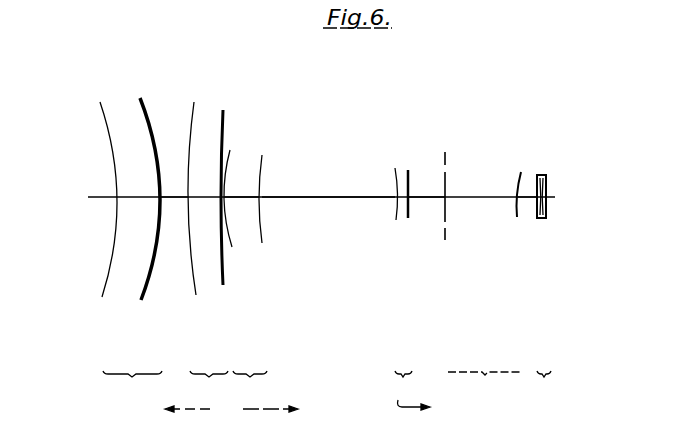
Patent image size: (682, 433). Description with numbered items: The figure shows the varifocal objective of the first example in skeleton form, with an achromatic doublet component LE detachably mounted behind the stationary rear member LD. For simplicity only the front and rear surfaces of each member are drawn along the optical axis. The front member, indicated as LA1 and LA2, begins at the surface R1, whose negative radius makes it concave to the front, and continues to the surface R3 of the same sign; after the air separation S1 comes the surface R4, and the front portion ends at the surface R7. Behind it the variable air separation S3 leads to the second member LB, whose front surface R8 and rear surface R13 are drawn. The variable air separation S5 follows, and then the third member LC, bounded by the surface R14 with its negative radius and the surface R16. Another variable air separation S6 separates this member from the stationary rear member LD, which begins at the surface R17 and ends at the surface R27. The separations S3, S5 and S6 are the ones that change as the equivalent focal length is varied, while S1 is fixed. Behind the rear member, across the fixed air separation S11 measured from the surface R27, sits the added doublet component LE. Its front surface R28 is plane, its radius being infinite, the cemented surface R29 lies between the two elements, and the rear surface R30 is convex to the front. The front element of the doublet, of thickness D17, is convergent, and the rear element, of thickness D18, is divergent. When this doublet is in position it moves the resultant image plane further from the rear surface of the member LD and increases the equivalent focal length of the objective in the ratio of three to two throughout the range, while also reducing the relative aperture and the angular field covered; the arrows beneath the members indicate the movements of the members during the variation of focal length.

The front surface of the front member R1 is at (116, 189).
The rear surface of the front member R3 is at (140, 99).
The fourth surface of the objective R4 is at (194, 103).
The seventh surface of the objective R7 is at (224, 122).
The eighth surface of the objective R8 is at (230, 165).
The thirteenth surface of the objective R13 is at (263, 186).
The fourteenth surface of the objective R14 is at (396, 180).
The sixteenth surface of the objective R16 is at (411, 173).
The seventeenth surface of the objective R17 is at (447, 185).
The rear surface of the stationary rear member R27 is at (521, 173).
The front surface of the added doublet component R28 is at (531, 184).
The cemented surface of the doublet component R29 is at (546, 178).
The rear surface of the doublet component R30 is at (548, 183).
The axial thickness of the convergent doublet element D17 is at (542, 218).
The axial thickness of the divergent doublet element D18 is at (548, 202).
The first air separation S1 is at (178, 197).
The variable air separation behind the front member S3 is at (229, 238).
The variable air separation between second and third members S5 is at (332, 197).
The variable air separation in front of the rear member S6 is at (400, 197).
The air separation between rear member and doublet S11 is at (528, 197).
The front lens member LA1 is at (132, 388).
The front lens member LA2 is at (209, 388).
The second lens member LB is at (250, 388).
The third lens member LC is at (402, 388).
The stationary rear member LD is at (485, 388).
The achromatic doublet component LE is at (543, 388).